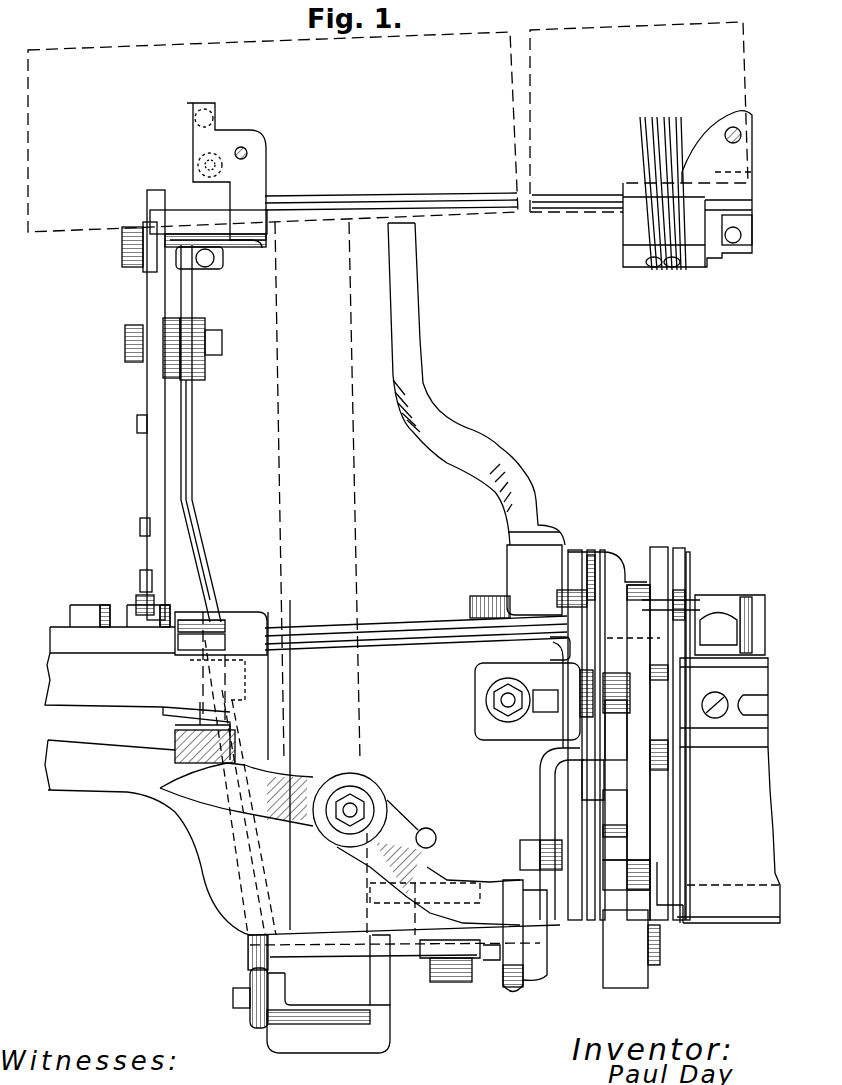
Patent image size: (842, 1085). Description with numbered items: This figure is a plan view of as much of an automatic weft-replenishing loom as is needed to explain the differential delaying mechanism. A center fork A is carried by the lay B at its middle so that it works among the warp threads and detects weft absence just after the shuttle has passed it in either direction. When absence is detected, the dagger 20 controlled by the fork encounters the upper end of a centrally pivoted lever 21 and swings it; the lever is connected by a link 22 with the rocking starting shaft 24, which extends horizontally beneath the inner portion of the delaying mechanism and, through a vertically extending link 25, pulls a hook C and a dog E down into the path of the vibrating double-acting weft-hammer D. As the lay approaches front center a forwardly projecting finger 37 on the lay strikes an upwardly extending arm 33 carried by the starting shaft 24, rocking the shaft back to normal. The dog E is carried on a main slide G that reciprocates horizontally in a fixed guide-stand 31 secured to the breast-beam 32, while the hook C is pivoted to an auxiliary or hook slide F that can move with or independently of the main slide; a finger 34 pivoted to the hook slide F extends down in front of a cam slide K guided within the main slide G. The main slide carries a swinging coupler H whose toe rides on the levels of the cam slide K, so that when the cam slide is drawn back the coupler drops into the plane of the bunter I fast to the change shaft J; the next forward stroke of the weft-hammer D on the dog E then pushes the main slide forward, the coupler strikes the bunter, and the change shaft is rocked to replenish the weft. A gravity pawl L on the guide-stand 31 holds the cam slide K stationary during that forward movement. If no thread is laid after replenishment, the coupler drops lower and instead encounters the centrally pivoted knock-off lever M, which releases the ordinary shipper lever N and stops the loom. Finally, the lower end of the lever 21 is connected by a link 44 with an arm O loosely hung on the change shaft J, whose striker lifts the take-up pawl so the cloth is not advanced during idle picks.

The dagger 20 is at (143, 272).
The centrally pivoted lever 21 is at (170, 350).
The link 22 is at (187, 445).
The rocking starting shaft 24 is at (400, 625).
The vertically extending link 25 is at (686, 580).
The fixed guide-stand 31 is at (483, 741).
The breast-beam 32 is at (489, 778).
The upwardly extending arm 33 is at (213, 643).
The finger 34 is at (650, 873).
The forwardly projecting finger 37 is at (193, 295).
The link 44 is at (205, 600).
The center fork A is at (641, 146).
The lay B is at (273, 132).
The hook C is at (638, 590).
The double-acting weft-hammer D is at (460, 432).
The dog E is at (602, 580).
The auxiliary or hook slide F is at (653, 807).
The main slide G is at (625, 982).
The swinging coupler H is at (527, 858).
The bunter I is at (550, 910).
The change shaft J is at (740, 930).
The cam slide K is at (573, 795).
The gravity pawl L is at (615, 850).
The knock-off lever M is at (288, 785).
The shipper lever N is at (175, 742).
The arm O is at (380, 1030).